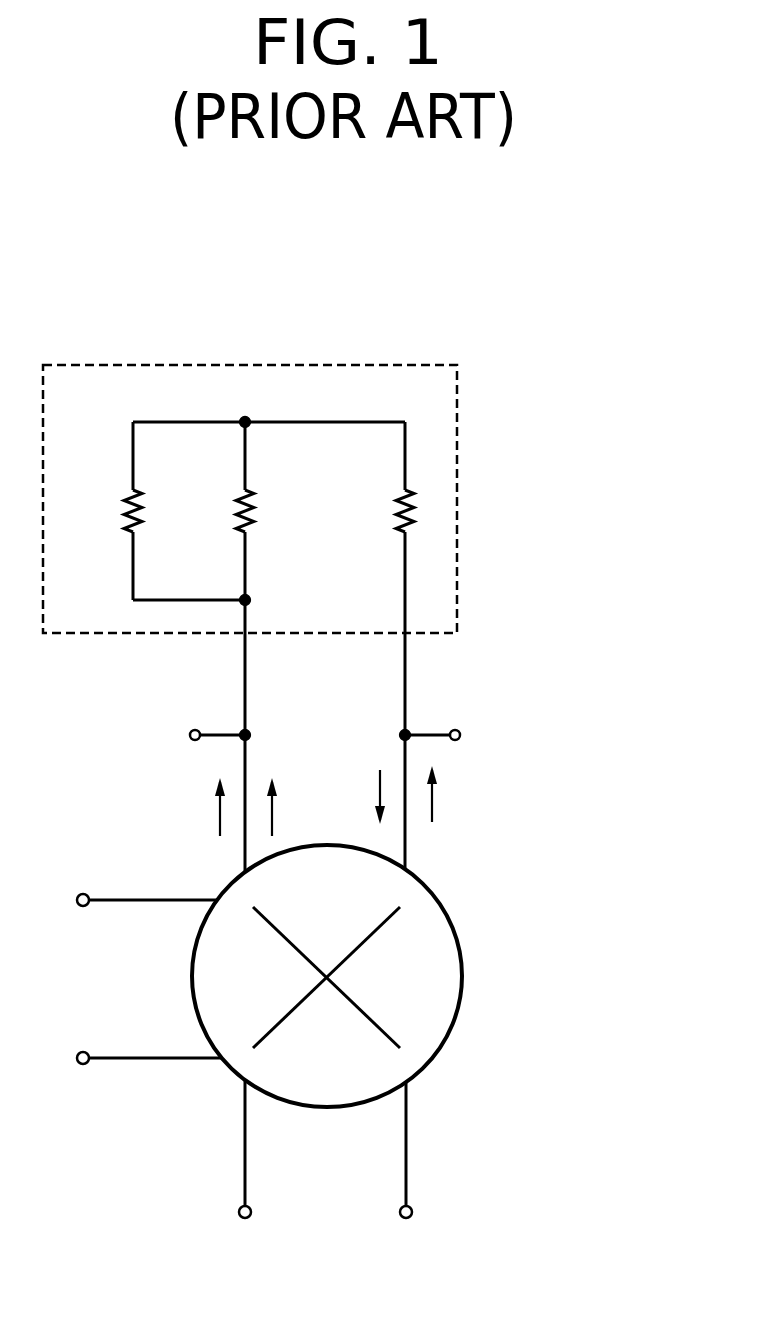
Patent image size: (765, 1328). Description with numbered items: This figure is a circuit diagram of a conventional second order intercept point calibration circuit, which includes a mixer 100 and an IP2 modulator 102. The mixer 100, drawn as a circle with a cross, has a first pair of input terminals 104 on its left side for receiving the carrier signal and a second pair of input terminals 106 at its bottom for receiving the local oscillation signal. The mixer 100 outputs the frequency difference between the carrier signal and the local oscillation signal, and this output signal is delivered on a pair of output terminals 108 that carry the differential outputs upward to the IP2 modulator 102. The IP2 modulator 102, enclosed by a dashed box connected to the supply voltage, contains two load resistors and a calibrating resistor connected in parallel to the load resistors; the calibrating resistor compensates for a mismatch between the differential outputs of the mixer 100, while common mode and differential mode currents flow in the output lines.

The mixer 100 is at (462, 976).
The IP2 modulator 102 is at (457, 500).
The first pair of input terminals 104 is at (150, 900).
The second pair of input terminals 106 is at (245, 1155).
The pair of output terminals 108 is at (245, 680).